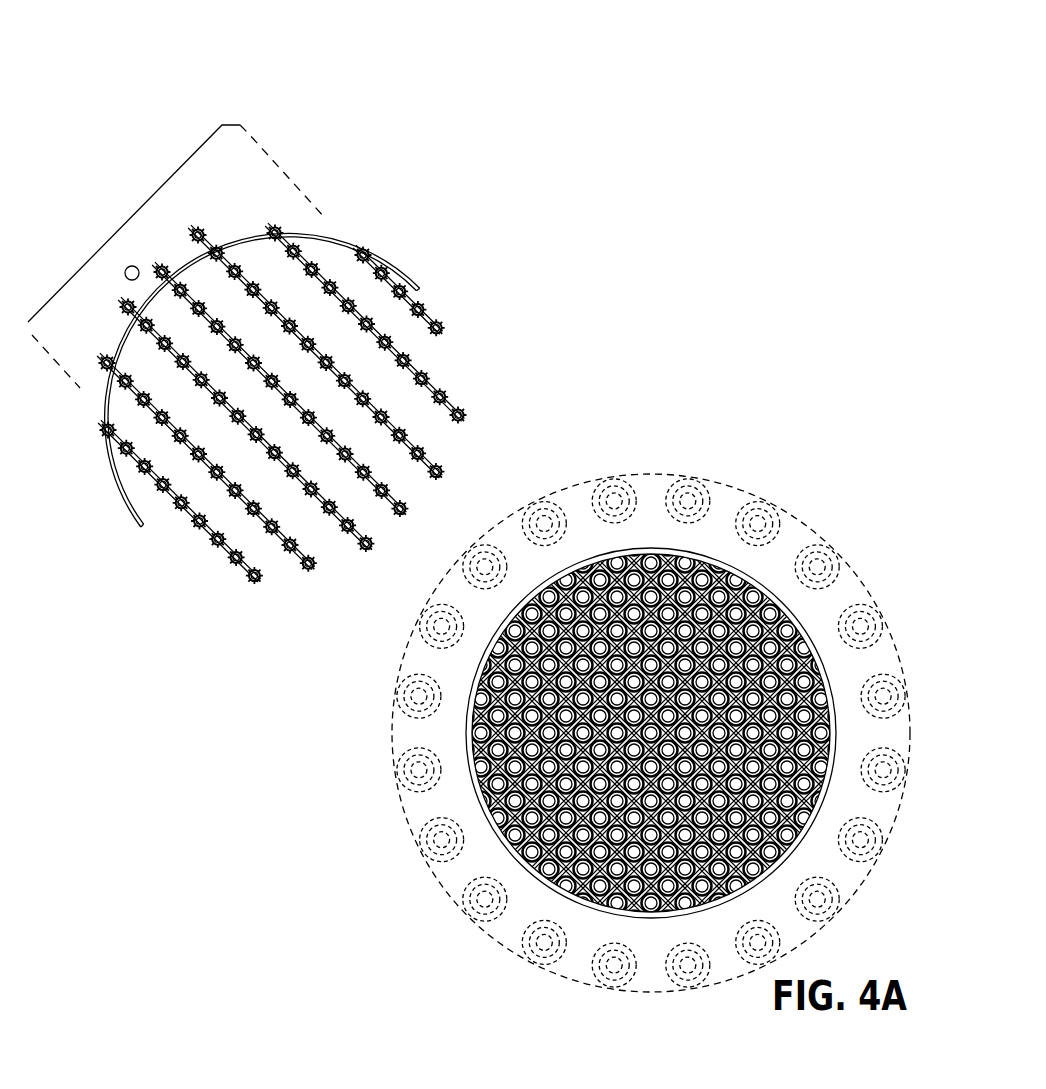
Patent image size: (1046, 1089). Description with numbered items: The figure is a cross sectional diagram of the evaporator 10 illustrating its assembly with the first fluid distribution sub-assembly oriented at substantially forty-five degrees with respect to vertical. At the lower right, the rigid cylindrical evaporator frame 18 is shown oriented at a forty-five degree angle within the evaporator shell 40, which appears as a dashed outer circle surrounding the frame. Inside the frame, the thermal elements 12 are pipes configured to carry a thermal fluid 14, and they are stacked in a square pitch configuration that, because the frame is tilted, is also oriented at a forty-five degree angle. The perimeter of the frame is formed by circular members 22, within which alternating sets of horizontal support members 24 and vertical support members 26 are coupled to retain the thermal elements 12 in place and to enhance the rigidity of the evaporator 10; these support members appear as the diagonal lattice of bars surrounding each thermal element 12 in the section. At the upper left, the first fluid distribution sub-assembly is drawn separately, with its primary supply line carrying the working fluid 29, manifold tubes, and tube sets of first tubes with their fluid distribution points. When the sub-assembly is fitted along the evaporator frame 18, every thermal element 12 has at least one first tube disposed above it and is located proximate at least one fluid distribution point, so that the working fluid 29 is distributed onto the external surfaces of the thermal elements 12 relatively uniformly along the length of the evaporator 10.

The evaporator 10 is at (163, 123).
The working fluid 29 is at (130, 267).
The thermal fluid 14 is at (705, 580).
The thermal element 12 is at (758, 595).
The circular member 22 is at (793, 608).
The horizontal support member 24 is at (823, 693).
The vertical support member 26 is at (832, 755).
The evaporator shell 40 is at (417, 733).
The evaporator frame 18 is at (475, 795).